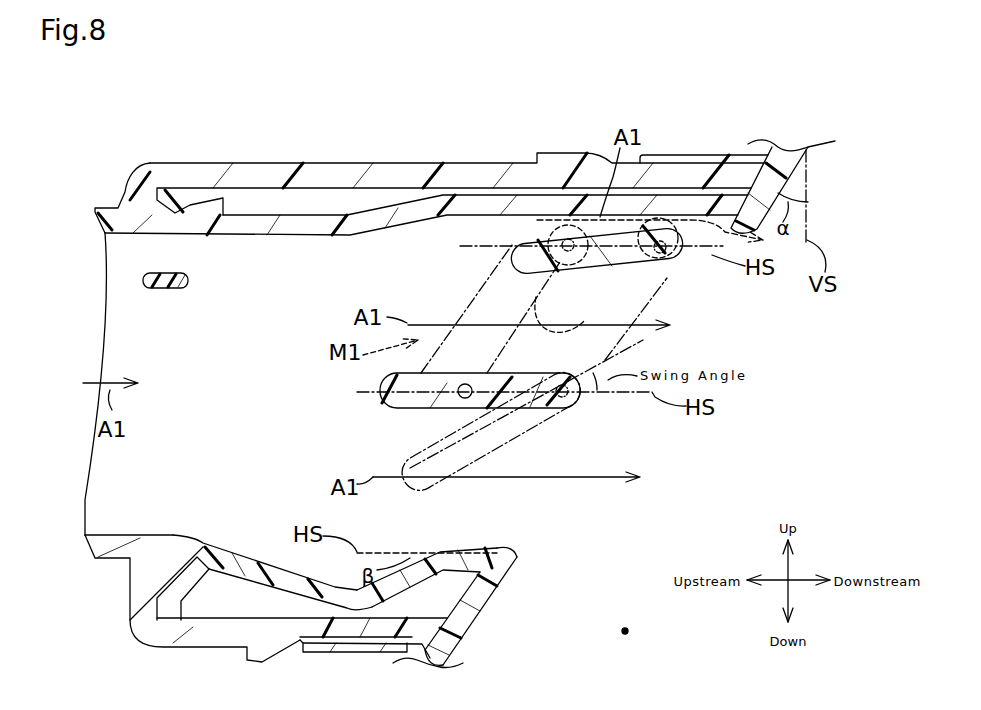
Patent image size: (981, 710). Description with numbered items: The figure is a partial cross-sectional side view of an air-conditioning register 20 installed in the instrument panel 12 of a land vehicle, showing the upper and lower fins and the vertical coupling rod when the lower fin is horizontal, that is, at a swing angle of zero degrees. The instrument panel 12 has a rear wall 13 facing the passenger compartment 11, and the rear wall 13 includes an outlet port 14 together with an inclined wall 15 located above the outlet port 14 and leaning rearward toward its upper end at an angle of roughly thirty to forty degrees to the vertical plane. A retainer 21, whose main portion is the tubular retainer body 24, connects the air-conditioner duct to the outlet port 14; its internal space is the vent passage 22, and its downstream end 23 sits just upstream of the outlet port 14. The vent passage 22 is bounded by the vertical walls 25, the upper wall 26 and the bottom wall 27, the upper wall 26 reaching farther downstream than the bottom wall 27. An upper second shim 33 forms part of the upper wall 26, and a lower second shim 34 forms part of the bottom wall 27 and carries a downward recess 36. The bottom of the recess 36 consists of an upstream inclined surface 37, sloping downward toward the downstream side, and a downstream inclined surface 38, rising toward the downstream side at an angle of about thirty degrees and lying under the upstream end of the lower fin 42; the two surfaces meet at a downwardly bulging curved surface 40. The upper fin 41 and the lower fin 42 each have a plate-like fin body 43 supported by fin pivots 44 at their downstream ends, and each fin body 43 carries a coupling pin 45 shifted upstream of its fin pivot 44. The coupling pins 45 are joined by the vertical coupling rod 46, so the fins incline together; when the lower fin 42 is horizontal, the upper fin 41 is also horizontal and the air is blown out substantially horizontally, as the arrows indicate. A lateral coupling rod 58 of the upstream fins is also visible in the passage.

The passenger compartment 11 is at (628, 631).
The instrument panel 12 is at (506, 611).
The rear wall 13 is at (483, 600).
The outlet port 14 is at (515, 548).
The inclined wall 15 is at (772, 155).
The air-conditioning register 20 is at (376, 134).
The retainer 21 is at (153, 174).
The vent passage 22 is at (103, 240).
The downstream end 23 is at (487, 548).
The retainer body 24 is at (143, 172).
The vertical wall 25 is at (111, 532).
The upper wall 26 is at (395, 178).
The bottom wall 27 is at (242, 633).
The upper second shim 33 is at (458, 200).
The lower second shim 34 is at (450, 617).
The recess 36 is at (427, 558).
The upstream inclined surface 37 is at (227, 547).
The downstream inclined surface 38 is at (407, 552).
The curved surface 40 is at (337, 590).
The upper fin 41 is at (597, 275).
The lower fin 42 is at (511, 418).
The fin body 43 is at (652, 270).
The fin pivot 44 is at (688, 247).
The coupling pin 45 is at (517, 262).
The vertical coupling rod 46 is at (467, 307).
The lateral coupling rod 58 is at (173, 292).